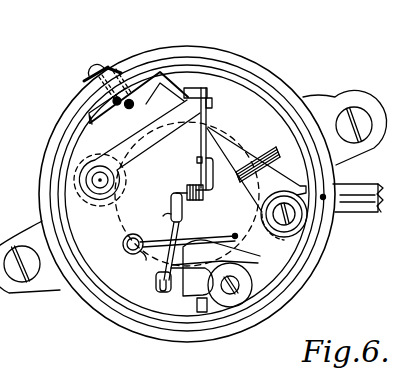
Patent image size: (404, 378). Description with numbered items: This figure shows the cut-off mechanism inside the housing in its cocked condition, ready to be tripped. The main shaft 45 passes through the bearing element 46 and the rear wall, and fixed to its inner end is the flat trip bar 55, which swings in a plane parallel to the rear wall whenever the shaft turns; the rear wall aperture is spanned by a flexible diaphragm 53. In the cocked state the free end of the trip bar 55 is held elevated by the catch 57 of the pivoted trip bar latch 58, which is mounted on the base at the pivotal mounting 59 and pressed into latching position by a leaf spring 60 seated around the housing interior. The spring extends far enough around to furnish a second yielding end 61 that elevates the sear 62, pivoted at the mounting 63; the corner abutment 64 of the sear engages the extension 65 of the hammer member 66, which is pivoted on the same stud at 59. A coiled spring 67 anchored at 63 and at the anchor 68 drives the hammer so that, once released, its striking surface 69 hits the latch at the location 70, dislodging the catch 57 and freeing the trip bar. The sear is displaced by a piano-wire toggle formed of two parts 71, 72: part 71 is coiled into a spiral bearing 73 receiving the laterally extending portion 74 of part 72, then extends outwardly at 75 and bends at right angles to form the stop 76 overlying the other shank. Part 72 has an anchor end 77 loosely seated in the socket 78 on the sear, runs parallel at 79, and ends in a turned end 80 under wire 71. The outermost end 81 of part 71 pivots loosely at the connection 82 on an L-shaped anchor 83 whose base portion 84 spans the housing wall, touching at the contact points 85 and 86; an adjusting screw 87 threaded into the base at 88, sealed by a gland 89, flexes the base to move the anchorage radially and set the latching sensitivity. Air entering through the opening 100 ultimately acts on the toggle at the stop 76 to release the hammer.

The main shaft 45 is at (91, 180).
The bearing element 46 is at (80, 157).
The flexible diaphragm 53 is at (222, 262).
The trip bar 55 is at (138, 138).
The catch 57 is at (194, 139).
The trip bar latch 58 is at (310, 108).
The pivotal mounting 59 is at (290, 218).
The spring 60 is at (305, 173).
The second yielding end 61 is at (191, 309).
The sear 62 is at (205, 312).
The pivotal mounting 63 is at (238, 286).
The abutment 64 is at (177, 292).
The extension 65 is at (171, 296).
The hammer member 66 is at (232, 243).
The coiled spring 67 is at (127, 250).
The spring anchor 68 is at (235, 234).
The striking surface 69 is at (210, 206).
The striking location 70 is at (256, 169).
The toggle part 71 is at (203, 153).
The toggle part 72 is at (170, 224).
The spiral bearing 73 is at (189, 181).
The laterally extending portion 74 is at (175, 188).
The outward extension 75 is at (171, 198).
The stop 76 is at (163, 214).
The anchor end 77 is at (156, 282).
The socket 78 is at (157, 290).
The parallel portion 79 is at (236, 141).
The turned end 80 is at (198, 160).
The outermost end 81 is at (207, 101).
The pivotal connection 82 is at (245, 123).
The anchor 83 is at (205, 88).
The base portion 84 is at (116, 107).
The contact point 85 is at (91, 122).
The contact point 86 is at (160, 70).
The adjusting screw 87 is at (105, 60).
The threaded connection 88 is at (134, 106).
The gland 89 is at (114, 62).
The opening 100 is at (323, 197).